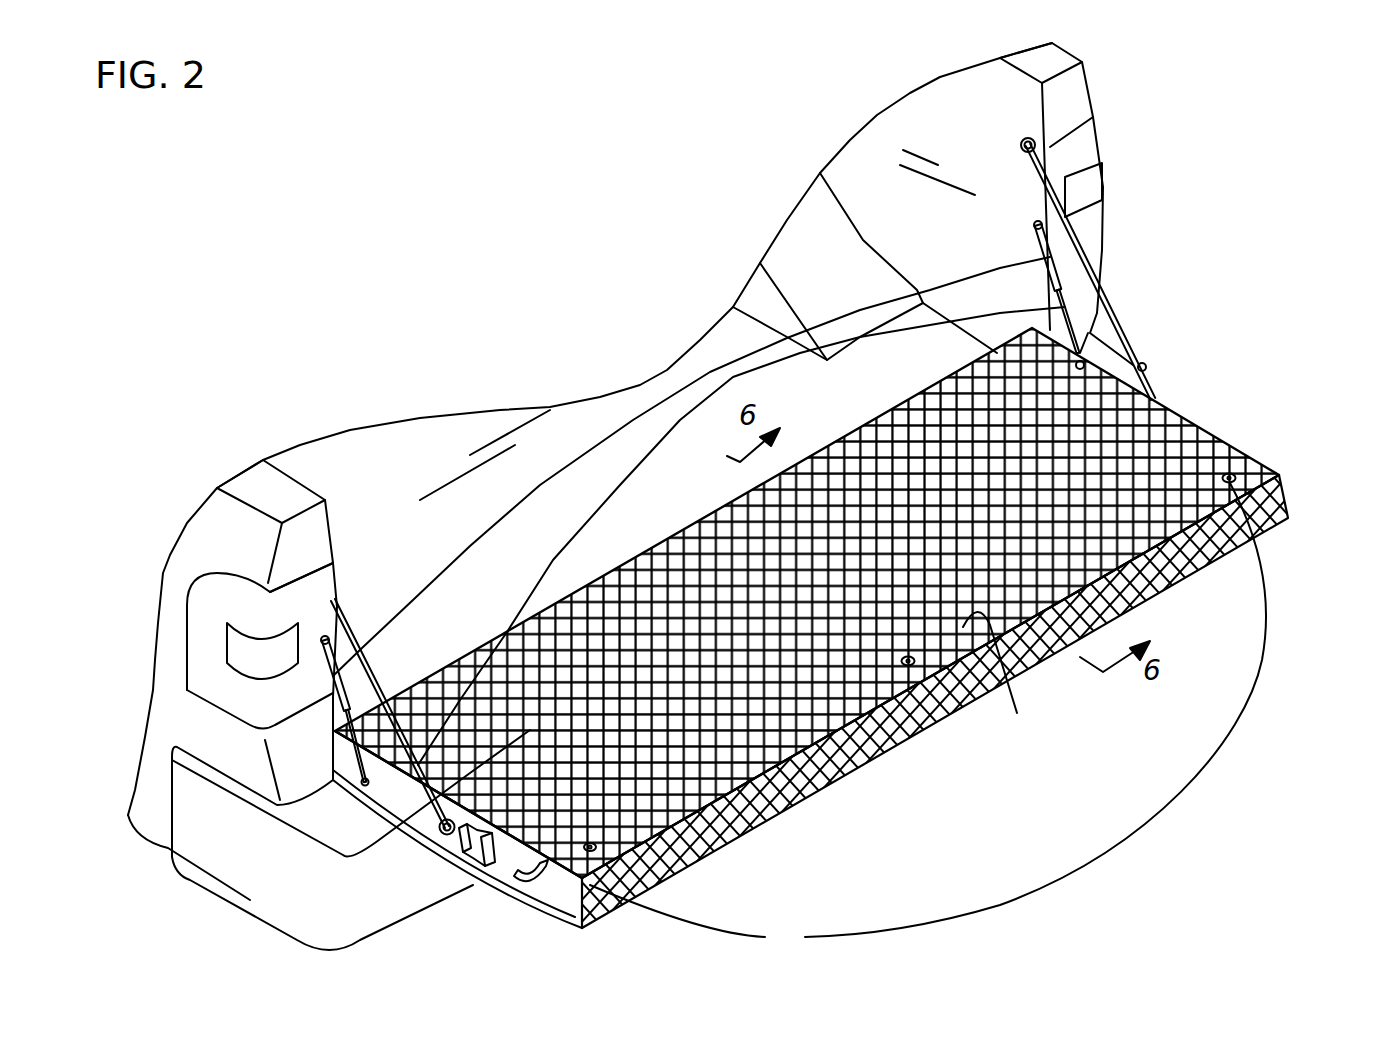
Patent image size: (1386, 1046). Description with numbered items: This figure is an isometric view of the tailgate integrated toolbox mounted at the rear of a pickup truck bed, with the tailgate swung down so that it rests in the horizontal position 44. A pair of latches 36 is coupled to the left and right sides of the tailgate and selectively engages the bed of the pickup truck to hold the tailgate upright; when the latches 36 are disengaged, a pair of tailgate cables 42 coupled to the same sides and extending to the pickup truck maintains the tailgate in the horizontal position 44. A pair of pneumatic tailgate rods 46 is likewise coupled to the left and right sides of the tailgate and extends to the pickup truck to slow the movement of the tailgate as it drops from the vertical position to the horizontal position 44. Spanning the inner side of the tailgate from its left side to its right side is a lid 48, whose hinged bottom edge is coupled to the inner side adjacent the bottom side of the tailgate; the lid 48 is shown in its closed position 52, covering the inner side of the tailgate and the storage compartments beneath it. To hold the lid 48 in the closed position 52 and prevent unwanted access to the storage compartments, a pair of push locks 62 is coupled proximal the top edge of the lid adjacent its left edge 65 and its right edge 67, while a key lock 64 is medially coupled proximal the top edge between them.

The latches 36 is at (487, 863).
The tailgate cables 42 is at (1050, 257).
The horizontal position 44 is at (1170, 440).
The pneumatic tailgate rods 46 is at (520, 708).
The lid 48 is at (803, 703).
The closed position 52 is at (1017, 713).
The push locks 62 is at (928, 718).
The key lock 64 is at (912, 667).
The left edge 65 is at (548, 887).
The right edge 67 is at (1237, 470).